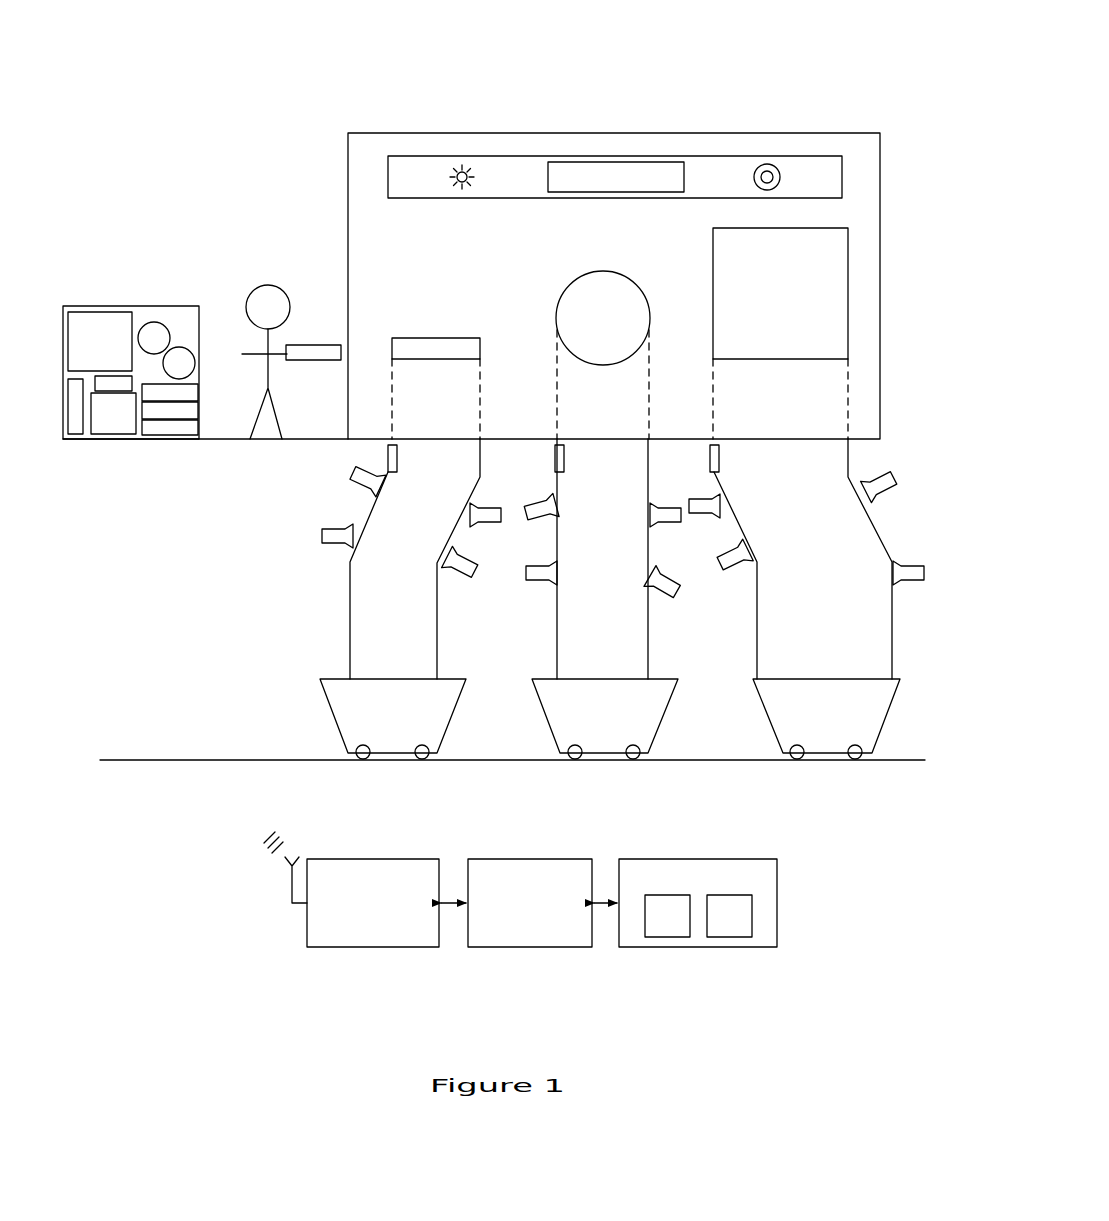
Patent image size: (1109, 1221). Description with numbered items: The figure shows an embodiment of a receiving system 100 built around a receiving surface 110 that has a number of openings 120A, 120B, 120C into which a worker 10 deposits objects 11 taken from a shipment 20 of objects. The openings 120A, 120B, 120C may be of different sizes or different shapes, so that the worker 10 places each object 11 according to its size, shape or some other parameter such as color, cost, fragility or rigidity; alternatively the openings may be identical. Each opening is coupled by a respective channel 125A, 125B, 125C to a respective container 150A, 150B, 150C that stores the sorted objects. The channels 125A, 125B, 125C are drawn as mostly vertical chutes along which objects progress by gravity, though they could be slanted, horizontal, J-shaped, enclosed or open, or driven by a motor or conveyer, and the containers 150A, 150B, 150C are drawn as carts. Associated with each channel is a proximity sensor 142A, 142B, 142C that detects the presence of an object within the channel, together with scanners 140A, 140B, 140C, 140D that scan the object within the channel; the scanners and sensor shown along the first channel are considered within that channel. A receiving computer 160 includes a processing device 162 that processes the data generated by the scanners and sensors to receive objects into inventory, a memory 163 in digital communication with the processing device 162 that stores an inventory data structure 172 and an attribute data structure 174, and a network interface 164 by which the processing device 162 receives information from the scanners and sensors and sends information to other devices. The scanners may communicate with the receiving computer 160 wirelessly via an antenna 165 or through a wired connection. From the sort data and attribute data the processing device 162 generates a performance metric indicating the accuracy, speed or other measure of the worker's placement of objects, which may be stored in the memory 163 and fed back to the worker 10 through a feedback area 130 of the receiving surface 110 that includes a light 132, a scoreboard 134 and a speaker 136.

The receiving system 100 is at (631, 59).
The receiving surface 110 is at (561, 133).
The feedback area 130 is at (388, 167).
The light 132 is at (462, 165).
The scoreboard 134 is at (632, 161).
The speaker 136 is at (768, 165).
The opening 120A is at (418, 338).
The opening 120B is at (572, 282).
The opening 120C is at (713, 227).
The worker 10 is at (253, 279).
The object 11 is at (316, 360).
The shipment 20 is at (150, 306).
The proximity sensor 142A is at (388, 451).
The proximity sensor 142B is at (555, 453).
The proximity sensor 142C is at (710, 455).
The scanner 140A is at (353, 487).
The scanner 140B is at (322, 538).
The scanner 140C is at (490, 527).
The scanner 140D is at (462, 580).
The channel 125A is at (350, 600).
The channel 125B is at (555, 620).
The channel 125C is at (757, 620).
The container 150A is at (332, 707).
The container 150B is at (541, 710).
The container 150C is at (762, 712).
The receiving computer 160 is at (483, 967).
The processing device 162 is at (540, 860).
The memory 163 is at (707, 860).
The network interface 164 is at (370, 860).
The antenna 165 is at (291, 904).
The inventory data structure 172 is at (690, 964).
The attribute data structure 174 is at (727, 937).